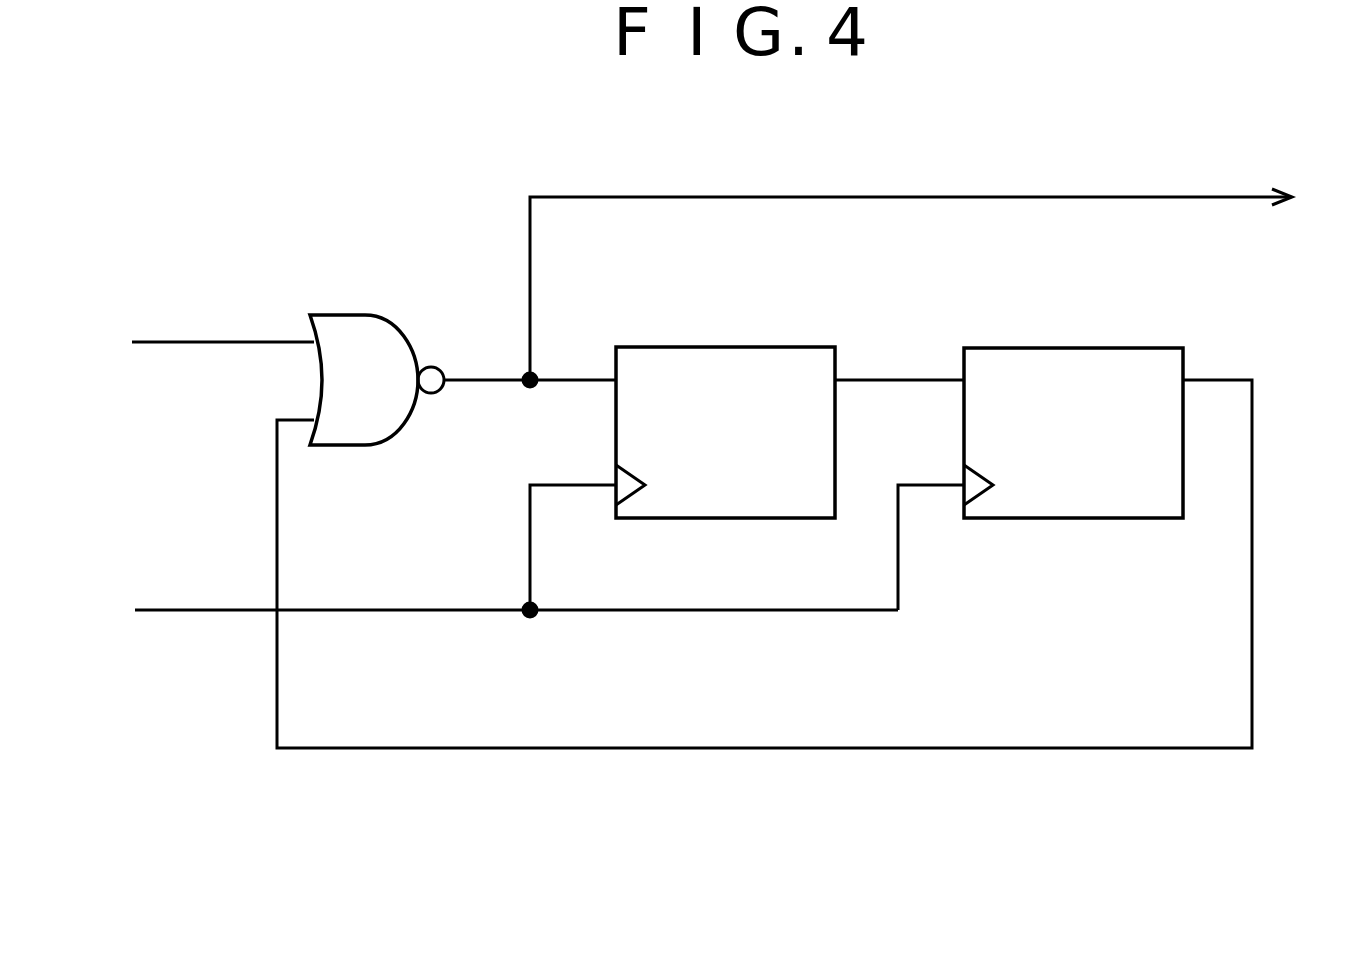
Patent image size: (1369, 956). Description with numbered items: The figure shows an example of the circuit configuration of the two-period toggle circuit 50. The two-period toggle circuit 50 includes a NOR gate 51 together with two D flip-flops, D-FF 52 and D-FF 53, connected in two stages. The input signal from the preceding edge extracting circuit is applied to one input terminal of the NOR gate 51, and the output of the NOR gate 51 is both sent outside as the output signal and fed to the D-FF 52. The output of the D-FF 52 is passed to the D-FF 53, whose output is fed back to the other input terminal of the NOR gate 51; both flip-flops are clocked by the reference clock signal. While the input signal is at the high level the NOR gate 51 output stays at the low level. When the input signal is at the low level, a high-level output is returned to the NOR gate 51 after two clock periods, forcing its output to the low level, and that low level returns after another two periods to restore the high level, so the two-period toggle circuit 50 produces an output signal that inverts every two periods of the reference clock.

The two-period toggle circuit 50 is at (418, 182).
The NOR gate 51 is at (362, 314).
The D-FF 52 is at (765, 348).
The D-FF 53 is at (1114, 348).